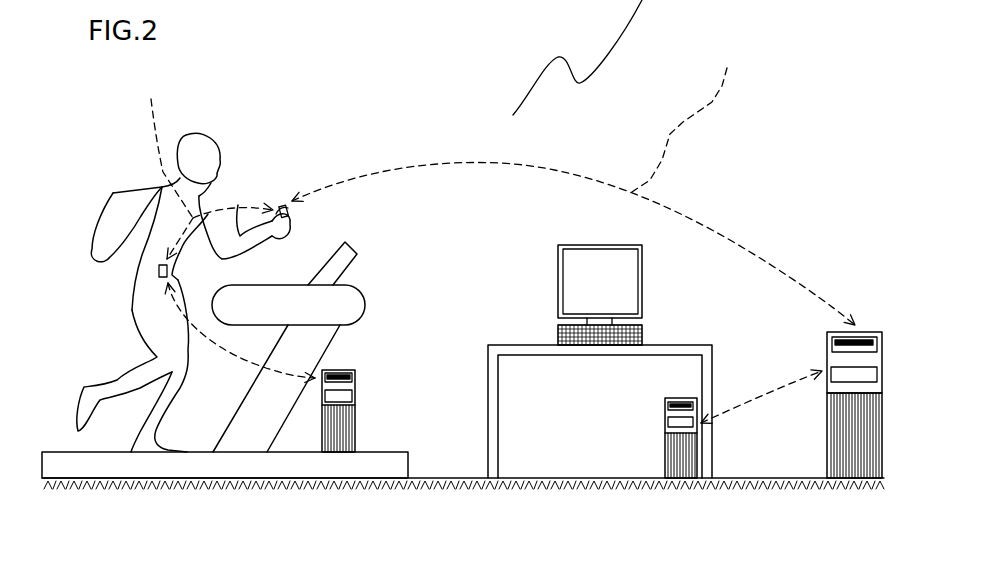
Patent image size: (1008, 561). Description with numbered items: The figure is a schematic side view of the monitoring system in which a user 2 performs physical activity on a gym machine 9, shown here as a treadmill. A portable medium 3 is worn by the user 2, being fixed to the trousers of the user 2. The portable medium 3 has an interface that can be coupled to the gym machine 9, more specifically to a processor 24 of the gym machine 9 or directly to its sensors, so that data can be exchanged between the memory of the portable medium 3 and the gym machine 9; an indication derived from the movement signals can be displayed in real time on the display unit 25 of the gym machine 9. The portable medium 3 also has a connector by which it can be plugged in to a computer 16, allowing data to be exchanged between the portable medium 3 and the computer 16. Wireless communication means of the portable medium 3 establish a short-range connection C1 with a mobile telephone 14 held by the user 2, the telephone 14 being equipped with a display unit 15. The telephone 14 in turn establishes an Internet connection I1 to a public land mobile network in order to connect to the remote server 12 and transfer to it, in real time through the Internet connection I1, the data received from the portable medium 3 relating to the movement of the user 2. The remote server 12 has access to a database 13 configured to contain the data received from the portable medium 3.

The user 2 is at (136, 220).
The portable medium 3 is at (154, 271).
The gym machine 9 is at (374, 333).
The remote server 12 is at (817, 420).
The database 13 is at (873, 324).
The mobile telephone 14 is at (296, 213).
The display unit 15 is at (281, 203).
The computer 16 is at (657, 423).
The processor 24 is at (360, 405).
The display unit 25 is at (311, 270).
The short-range connection C1 is at (228, 227).
The Internet connection I1 is at (573, 180).